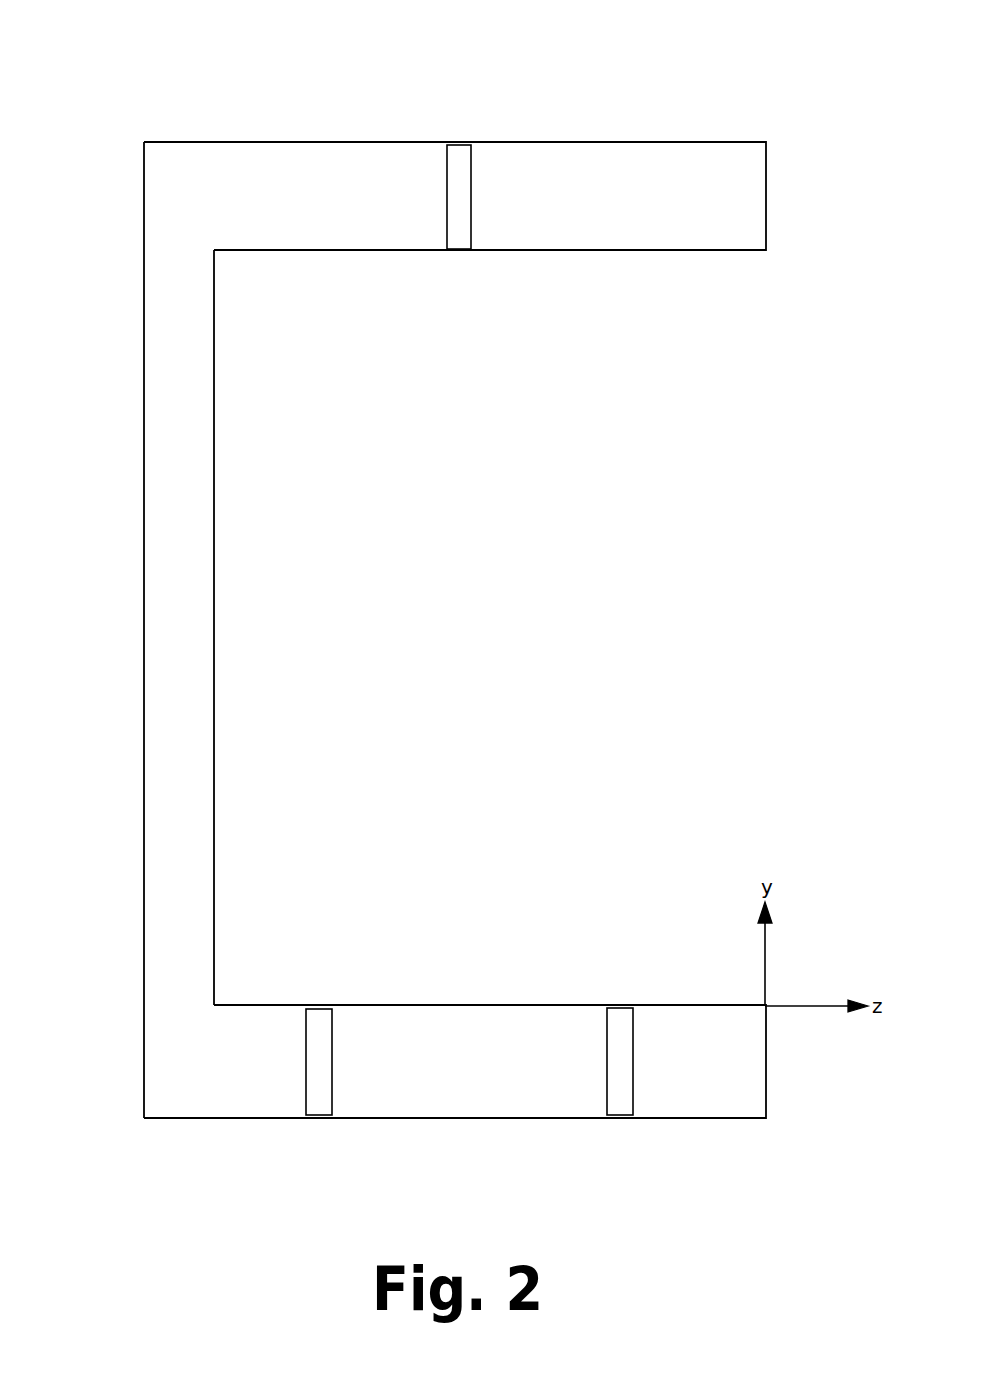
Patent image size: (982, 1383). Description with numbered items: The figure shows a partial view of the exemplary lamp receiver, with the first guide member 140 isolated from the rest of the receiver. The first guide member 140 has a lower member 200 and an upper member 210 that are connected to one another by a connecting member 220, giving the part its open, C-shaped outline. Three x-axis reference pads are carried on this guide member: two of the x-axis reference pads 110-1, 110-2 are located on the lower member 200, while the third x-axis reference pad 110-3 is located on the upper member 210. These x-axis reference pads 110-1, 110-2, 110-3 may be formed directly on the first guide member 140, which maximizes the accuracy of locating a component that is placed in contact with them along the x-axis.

The first guide member 140 is at (408, 612).
The lower member 200 is at (217, 1078).
The upper member 210 is at (648, 180).
The connecting member 220 is at (214, 660).
The x-axis reference pad 110-1 is at (620, 1008).
The x-axis reference pad 110-2 is at (320, 1009).
The x-axis reference pad 110-3 is at (458, 250).